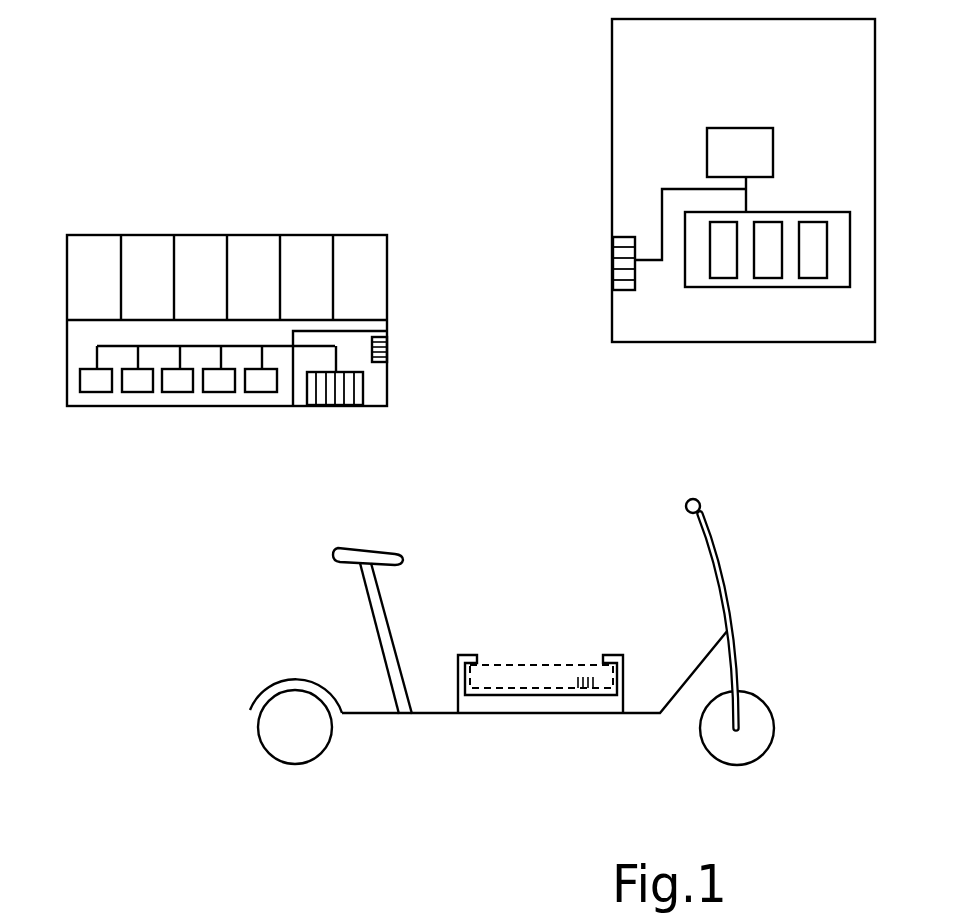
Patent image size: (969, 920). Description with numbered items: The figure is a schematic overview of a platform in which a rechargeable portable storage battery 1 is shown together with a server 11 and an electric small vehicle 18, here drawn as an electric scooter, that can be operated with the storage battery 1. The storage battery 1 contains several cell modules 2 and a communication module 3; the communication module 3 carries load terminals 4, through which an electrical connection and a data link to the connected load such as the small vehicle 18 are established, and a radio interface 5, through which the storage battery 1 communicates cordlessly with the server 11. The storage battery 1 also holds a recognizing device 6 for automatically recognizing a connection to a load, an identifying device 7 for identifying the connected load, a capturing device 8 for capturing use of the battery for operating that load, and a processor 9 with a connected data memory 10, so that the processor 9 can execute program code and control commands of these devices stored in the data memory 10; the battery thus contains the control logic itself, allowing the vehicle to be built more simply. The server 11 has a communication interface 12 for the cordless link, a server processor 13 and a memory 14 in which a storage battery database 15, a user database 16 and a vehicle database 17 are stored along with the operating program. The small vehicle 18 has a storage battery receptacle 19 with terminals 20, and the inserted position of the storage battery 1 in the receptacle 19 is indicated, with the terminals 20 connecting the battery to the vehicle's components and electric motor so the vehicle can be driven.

The storage battery 1 is at (67, 333).
The cell modules 2 is at (97, 243).
The communication module 3 is at (291, 387).
The load terminals 4 is at (334, 398).
The radio interface 5 is at (388, 352).
The recognizing device 6 is at (262, 387).
The identifying device 7 is at (221, 387).
The capturing device 8 is at (180, 387).
The processor 9 is at (138, 387).
The data memory 10 is at (97, 387).
The server 11 is at (612, 77).
The communication interface 12 is at (620, 262).
The server processor 13 is at (750, 128).
The memory 14 is at (816, 212).
The storage battery database 15 is at (723, 272).
The user database 16 is at (768, 272).
The vehicle database 17 is at (813, 272).
The electric small vehicle 18 is at (726, 582).
The storage battery receptacle 19 is at (625, 662).
The terminals 20 is at (585, 690).